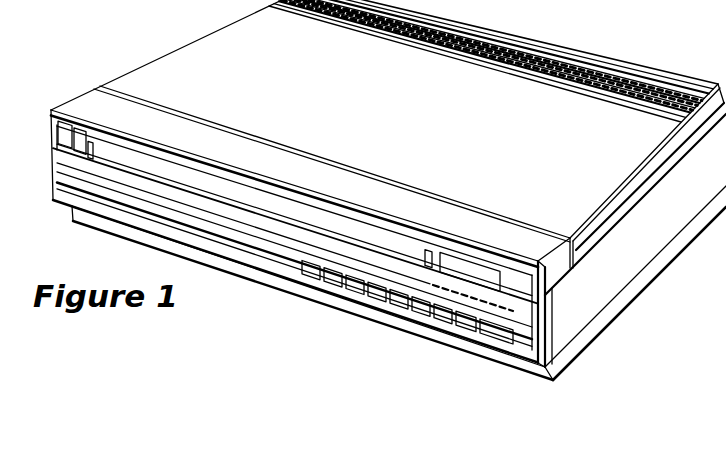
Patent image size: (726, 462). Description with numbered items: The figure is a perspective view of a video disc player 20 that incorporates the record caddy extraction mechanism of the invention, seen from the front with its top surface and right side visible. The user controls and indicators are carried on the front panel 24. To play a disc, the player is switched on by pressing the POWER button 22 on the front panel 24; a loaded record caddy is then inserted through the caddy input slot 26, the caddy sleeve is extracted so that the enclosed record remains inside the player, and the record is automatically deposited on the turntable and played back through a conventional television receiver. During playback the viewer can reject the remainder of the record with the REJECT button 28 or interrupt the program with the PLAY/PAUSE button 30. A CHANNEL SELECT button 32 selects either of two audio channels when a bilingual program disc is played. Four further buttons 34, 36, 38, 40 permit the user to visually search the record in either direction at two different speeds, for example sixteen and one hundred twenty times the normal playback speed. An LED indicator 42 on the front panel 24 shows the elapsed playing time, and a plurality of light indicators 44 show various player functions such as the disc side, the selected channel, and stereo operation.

The video disc player 20 is at (650, 359).
The POWER button 22 is at (510, 335).
The front panel 24 is at (118, 214).
The caddy input slot 26 is at (110, 148).
The REJECT button 28 is at (474, 322).
The PLAY/PAUSE button 30 is at (440, 319).
The CHANNEL SELECT button 32 is at (325, 267).
The search button 34 is at (408, 328).
The search button 36 is at (382, 318).
The search button 38 is at (350, 308).
The search button 40 is at (316, 292).
The LED indicator 42 is at (466, 262).
The light indicators 44 is at (513, 312).